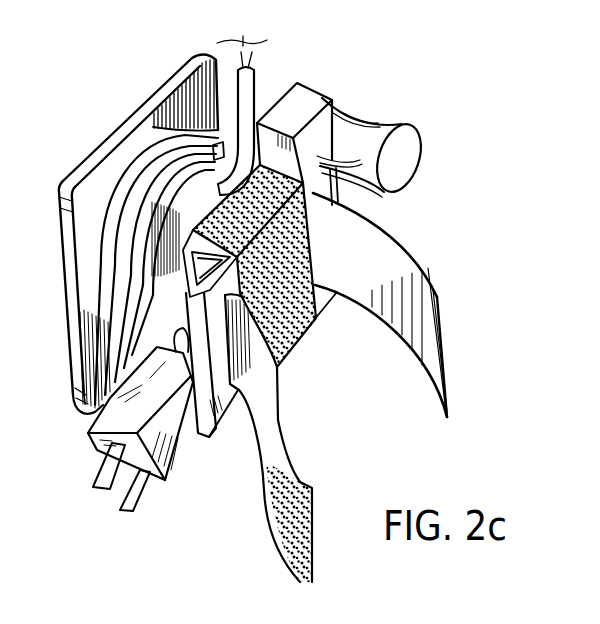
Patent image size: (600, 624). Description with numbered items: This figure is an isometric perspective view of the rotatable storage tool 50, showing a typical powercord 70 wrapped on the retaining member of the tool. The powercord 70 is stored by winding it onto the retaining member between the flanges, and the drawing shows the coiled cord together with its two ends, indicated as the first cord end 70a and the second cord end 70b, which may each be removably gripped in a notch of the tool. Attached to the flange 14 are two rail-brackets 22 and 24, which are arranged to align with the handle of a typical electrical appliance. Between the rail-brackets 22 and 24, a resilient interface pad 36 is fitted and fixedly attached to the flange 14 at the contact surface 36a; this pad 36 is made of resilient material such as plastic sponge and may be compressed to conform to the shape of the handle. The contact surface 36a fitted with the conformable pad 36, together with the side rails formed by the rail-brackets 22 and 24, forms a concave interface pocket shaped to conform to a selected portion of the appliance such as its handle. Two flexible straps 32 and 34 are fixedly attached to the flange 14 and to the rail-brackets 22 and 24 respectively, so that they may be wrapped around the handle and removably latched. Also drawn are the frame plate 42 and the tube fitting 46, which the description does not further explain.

The flange 14 is at (283, 87).
The rail-bracket 22 is at (373, 213).
The rail-bracket 24 is at (213, 435).
The flexible strap 32 is at (436, 282).
The flexible strap 34 is at (296, 483).
The resilient interface pad 36 is at (287, 360).
The contact surface 36a is at (205, 208).
The frame plate 42 is at (169, 74).
The tube fitting 46 is at (356, 117).
The rotatable storage tool 50 is at (470, 207).
The powercord 70 is at (157, 132).
The cable end 70a is at (256, 80).
The cable plug end 70b is at (183, 337).